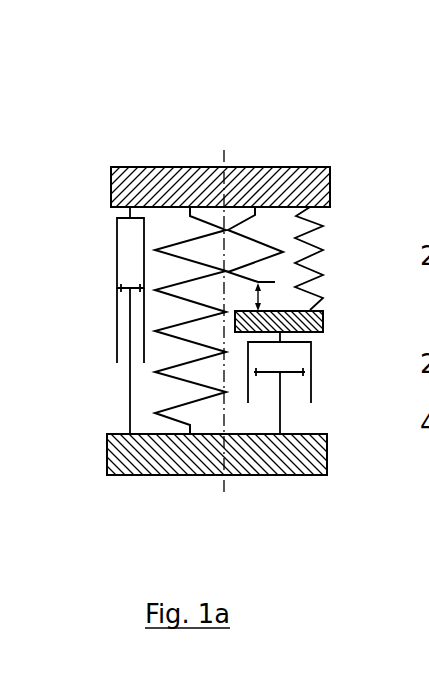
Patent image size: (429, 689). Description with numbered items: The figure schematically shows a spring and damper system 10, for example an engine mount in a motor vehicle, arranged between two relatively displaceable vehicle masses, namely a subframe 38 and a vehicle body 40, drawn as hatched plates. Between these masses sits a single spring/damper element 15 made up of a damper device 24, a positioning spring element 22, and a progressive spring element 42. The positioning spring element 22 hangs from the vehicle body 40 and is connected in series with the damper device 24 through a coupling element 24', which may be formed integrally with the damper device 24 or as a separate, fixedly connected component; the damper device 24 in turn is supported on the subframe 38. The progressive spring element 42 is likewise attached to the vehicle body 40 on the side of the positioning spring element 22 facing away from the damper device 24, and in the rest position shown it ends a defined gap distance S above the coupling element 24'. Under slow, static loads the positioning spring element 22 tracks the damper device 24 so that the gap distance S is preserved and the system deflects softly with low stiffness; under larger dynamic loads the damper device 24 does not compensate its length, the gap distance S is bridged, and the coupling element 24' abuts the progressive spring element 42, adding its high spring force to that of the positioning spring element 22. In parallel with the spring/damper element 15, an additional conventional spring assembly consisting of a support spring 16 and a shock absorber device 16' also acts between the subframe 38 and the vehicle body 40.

The spring and damper system 10 is at (312, 131).
The spring/damper element 15 is at (340, 229).
The support spring 16 is at (135, 325).
The shock absorber device 16' is at (82, 320).
The positioning spring element 22 is at (325, 252).
The damper device 24 is at (309, 383).
The coupling element 24' is at (306, 328).
The subframe 38 is at (193, 465).
The vehicle body 40 is at (172, 186).
The progressive spring element 42 is at (268, 262).
The gap distance S is at (250, 297).